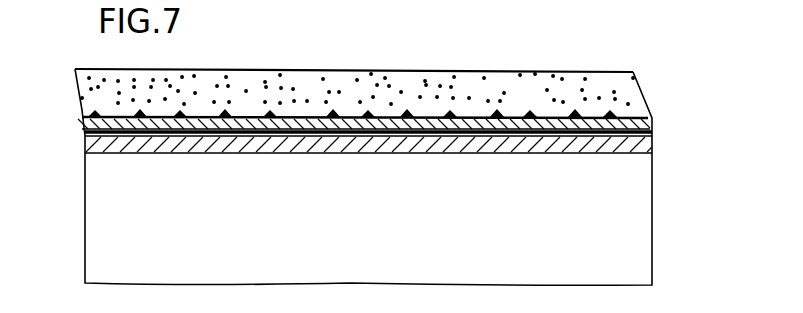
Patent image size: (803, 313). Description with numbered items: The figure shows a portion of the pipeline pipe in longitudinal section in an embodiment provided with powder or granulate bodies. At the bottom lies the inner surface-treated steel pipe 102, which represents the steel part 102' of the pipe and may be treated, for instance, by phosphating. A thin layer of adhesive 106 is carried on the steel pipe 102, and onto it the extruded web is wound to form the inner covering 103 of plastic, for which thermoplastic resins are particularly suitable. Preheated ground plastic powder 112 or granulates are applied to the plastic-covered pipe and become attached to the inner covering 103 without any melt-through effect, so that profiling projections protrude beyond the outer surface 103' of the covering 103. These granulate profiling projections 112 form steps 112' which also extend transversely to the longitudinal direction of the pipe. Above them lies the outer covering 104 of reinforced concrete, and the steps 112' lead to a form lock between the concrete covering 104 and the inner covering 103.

The steel pipe 102 is at (398, 166).
The base body 102' is at (337, 177).
The inner covering 103 is at (396, 100).
The outer surface of the covering 103' is at (365, 69).
The outer covering 104 is at (290, 78).
The layer of adhesive 106 is at (511, 129).
The plastic powder 112 is at (368, 68).
The steps 112' is at (365, 188).